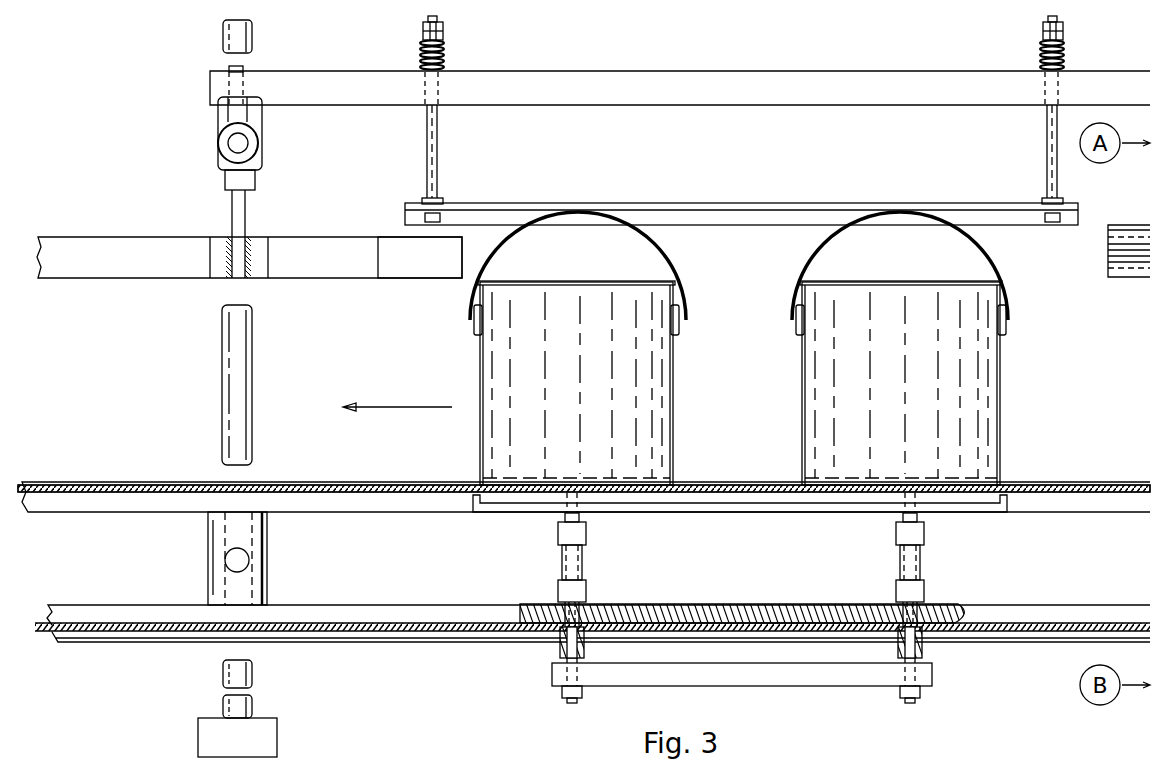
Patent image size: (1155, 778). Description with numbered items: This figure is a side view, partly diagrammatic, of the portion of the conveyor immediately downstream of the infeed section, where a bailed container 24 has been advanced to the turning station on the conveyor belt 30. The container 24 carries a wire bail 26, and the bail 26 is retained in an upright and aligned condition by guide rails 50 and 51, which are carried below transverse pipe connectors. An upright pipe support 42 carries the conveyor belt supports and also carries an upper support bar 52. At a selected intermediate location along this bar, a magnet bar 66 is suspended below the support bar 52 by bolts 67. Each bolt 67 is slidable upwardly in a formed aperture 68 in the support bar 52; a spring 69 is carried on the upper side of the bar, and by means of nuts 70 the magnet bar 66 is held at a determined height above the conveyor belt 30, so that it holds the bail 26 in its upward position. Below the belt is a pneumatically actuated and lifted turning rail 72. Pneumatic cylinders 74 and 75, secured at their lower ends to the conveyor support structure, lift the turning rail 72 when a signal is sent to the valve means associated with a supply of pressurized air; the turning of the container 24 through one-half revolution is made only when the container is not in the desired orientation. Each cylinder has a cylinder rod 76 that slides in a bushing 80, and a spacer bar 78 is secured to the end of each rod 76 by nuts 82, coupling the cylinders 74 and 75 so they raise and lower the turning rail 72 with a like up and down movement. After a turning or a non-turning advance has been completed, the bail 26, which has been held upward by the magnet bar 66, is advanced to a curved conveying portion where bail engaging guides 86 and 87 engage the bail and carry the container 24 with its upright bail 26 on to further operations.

The bailed container 24 is at (660, 373).
The wire bail 26 is at (676, 258).
The conveyor belt 30 is at (340, 482).
The upright pipe support 42 is at (236, 365).
The guide rail 50 is at (1108, 266).
The guide rail 51 is at (1108, 238).
The upper support bar 52 is at (683, 80).
The magnet bar 66 is at (740, 203).
The bolt 67 is at (427, 142).
The formed aperture 68 is at (444, 90).
The spring 69 is at (444, 53).
The nut 70 is at (423, 30).
The turning rail 72 is at (722, 513).
The pneumatic cylinder 74 is at (906, 564).
The pneumatic cylinder 75 is at (580, 565).
The cylinder rod 76 is at (560, 649).
The spacer bar 78 is at (766, 680).
The bushing 80 is at (586, 649).
The nut 82 is at (921, 687).
The bail engaging guide 86 is at (320, 244).
The bail engaging guide 87 is at (400, 268).